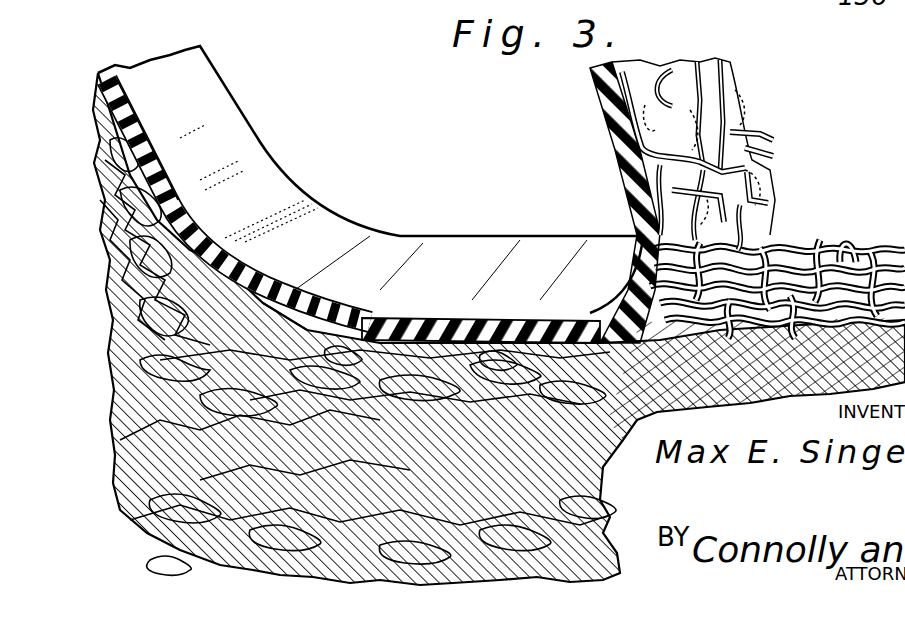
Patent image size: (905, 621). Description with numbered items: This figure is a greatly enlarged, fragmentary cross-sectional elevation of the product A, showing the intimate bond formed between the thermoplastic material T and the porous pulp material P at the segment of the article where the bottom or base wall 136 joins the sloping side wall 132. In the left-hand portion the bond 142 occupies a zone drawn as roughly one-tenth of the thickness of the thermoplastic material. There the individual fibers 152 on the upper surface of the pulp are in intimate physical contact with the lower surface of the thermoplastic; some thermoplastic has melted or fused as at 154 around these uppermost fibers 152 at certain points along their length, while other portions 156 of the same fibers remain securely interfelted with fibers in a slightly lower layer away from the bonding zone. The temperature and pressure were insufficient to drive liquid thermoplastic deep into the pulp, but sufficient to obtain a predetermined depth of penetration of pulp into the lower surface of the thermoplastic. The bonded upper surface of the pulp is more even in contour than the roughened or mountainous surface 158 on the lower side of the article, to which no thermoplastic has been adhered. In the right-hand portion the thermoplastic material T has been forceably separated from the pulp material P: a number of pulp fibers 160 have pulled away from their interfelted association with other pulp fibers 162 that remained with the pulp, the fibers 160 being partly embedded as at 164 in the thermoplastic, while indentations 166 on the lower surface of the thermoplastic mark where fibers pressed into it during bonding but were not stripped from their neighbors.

The product A is at (253, 112).
The thermoplastic material T is at (630, 172).
The porous pulp material P is at (405, 486).
The sloping side wall 132 is at (165, 213).
The bottom or base wall 136 is at (530, 486).
The bond 142 is at (445, 340).
The individual fibers 152 is at (497, 355).
The melted or fused thermoplastic material 154 is at (282, 308).
The interfelted fiber portions 156 is at (343, 352).
The roughened or mountainous surface 158 is at (180, 550).
The pulled-away pulp fibers 160 is at (752, 202).
The remaining pulp fibers 162 is at (827, 262).
The partly embedded fiber portions 164 is at (737, 125).
The indentations 166 is at (697, 90).